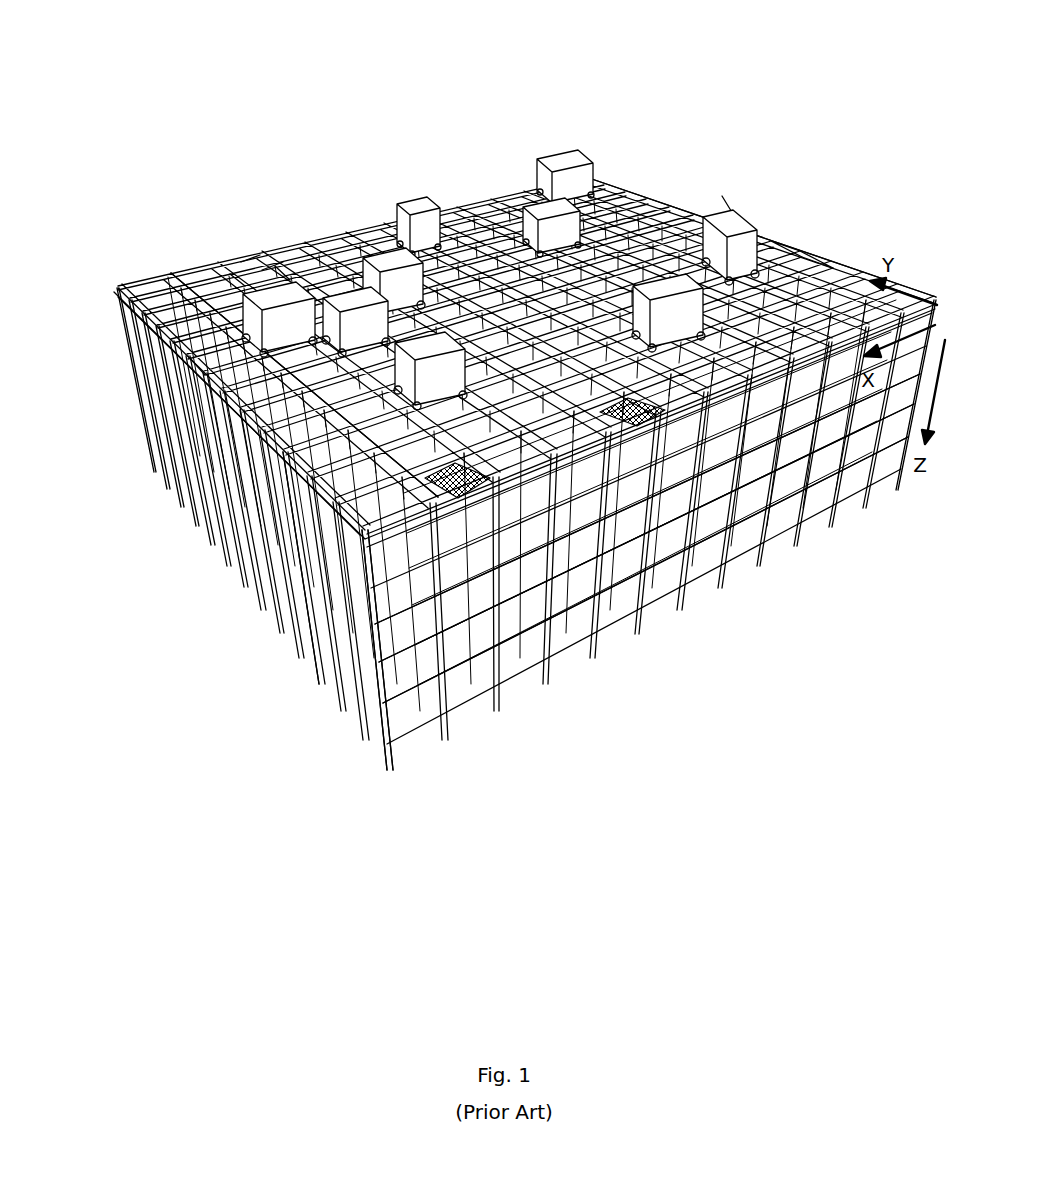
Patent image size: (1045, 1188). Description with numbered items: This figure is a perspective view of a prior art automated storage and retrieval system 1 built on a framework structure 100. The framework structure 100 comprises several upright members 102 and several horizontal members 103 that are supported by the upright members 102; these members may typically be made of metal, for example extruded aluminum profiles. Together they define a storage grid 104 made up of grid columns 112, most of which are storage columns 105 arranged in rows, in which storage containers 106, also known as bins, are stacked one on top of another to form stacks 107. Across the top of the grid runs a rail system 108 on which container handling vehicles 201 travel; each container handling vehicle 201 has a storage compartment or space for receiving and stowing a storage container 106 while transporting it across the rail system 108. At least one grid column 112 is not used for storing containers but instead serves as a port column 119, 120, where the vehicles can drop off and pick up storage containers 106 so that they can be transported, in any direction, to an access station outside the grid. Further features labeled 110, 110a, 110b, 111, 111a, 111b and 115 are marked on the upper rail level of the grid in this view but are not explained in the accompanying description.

The automated storage and retrieval system 1 is at (463, 86).
The framework structure 100 is at (130, 442).
The upright members 102 is at (375, 650).
The horizontal members 103 is at (727, 500).
The storage grid 104 is at (115, 322).
The storage columns 105 is at (290, 553).
The storage containers 106 is at (427, 680).
The stacks 107 is at (875, 510).
The rail system 108 is at (857, 285).
The first set of parallel rails 110 is at (803, 310).
The first rail of first set 110a is at (257, 262).
The second rail of first set 110b is at (260, 264).
The second set of parallel rails 111 is at (370, 240).
The first rail of second set 111a is at (228, 274).
The second rail of second set 111b is at (277, 263).
The grid columns 112 is at (760, 287).
The grid opening 115 is at (238, 262).
The port column 119 is at (470, 497).
The port column 120 is at (635, 410).
The container handling vehicle 201 is at (580, 168).